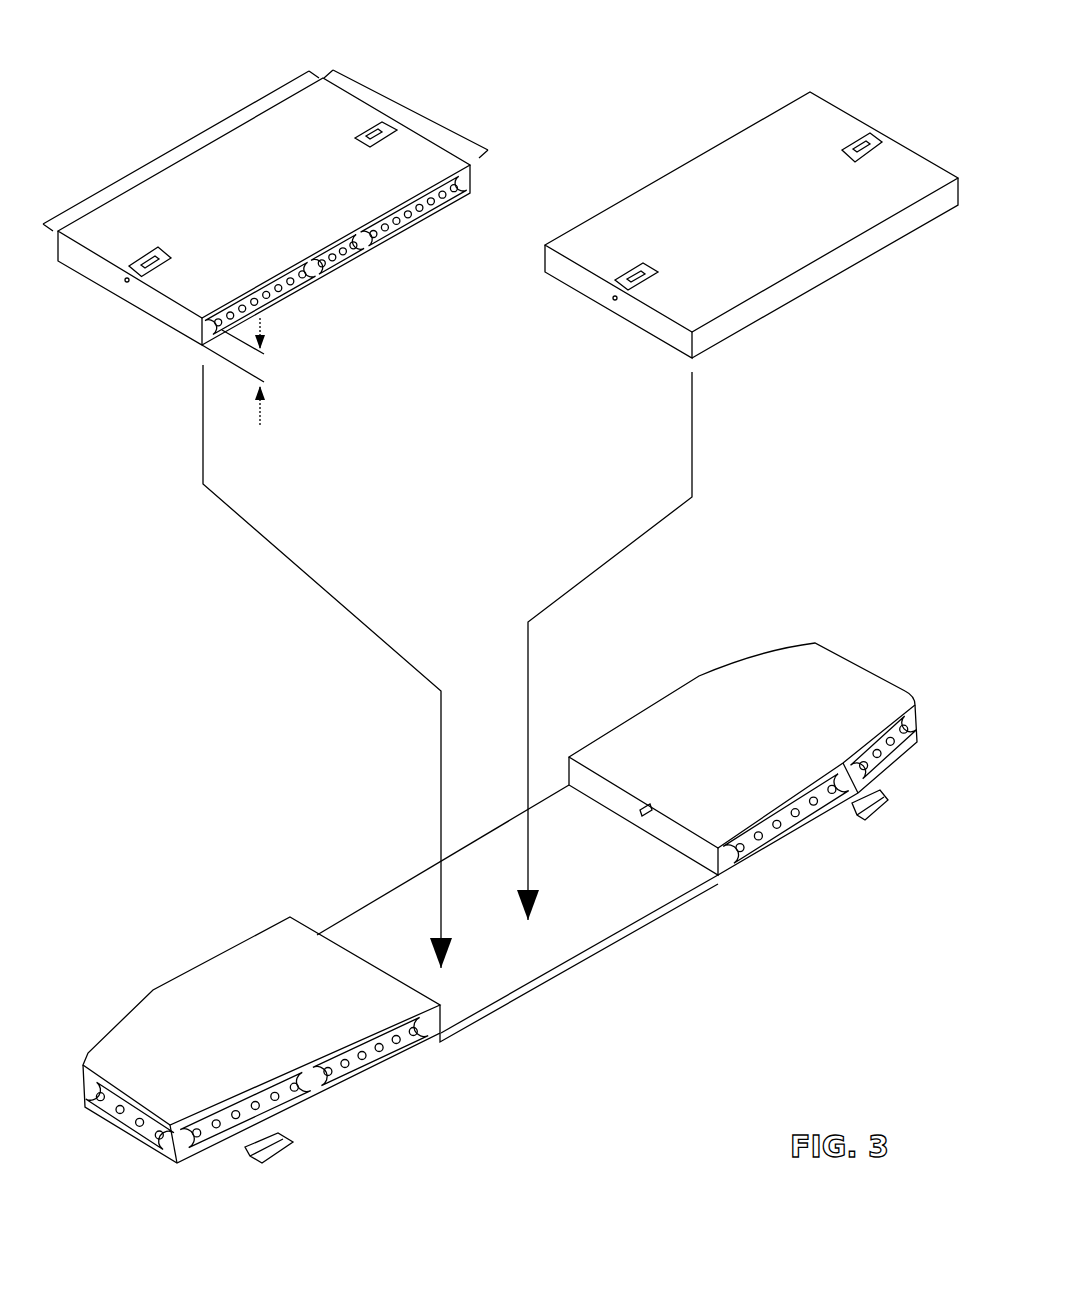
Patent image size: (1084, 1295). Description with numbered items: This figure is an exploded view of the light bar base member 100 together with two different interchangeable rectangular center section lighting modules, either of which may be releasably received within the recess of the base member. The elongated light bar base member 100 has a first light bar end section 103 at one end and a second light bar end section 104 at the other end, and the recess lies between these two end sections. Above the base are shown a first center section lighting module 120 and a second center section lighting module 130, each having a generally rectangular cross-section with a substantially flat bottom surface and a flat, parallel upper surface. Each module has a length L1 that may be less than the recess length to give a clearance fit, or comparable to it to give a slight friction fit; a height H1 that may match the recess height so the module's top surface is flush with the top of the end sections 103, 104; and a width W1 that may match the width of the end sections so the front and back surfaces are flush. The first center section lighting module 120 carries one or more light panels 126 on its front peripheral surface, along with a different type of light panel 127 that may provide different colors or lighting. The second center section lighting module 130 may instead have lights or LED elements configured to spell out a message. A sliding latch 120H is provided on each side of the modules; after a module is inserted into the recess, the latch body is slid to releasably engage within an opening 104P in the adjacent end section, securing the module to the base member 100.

The light bar base member 100 is at (607, 954).
The first light bar end section 103 is at (245, 968).
The second light bar end section 104 is at (784, 673).
The opening 104P is at (643, 806).
The first center section lighting module 120 is at (242, 93).
The sliding latch 120H is at (380, 130).
The light panels 126 is at (422, 219).
The light panel 127 is at (344, 264).
The second center section lighting module 130 is at (705, 147).
The length of center section lighting module L1 is at (192, 137).
The width of center section lighting module W1 is at (408, 103).
The height of center section lighting module H1 is at (237, 386).